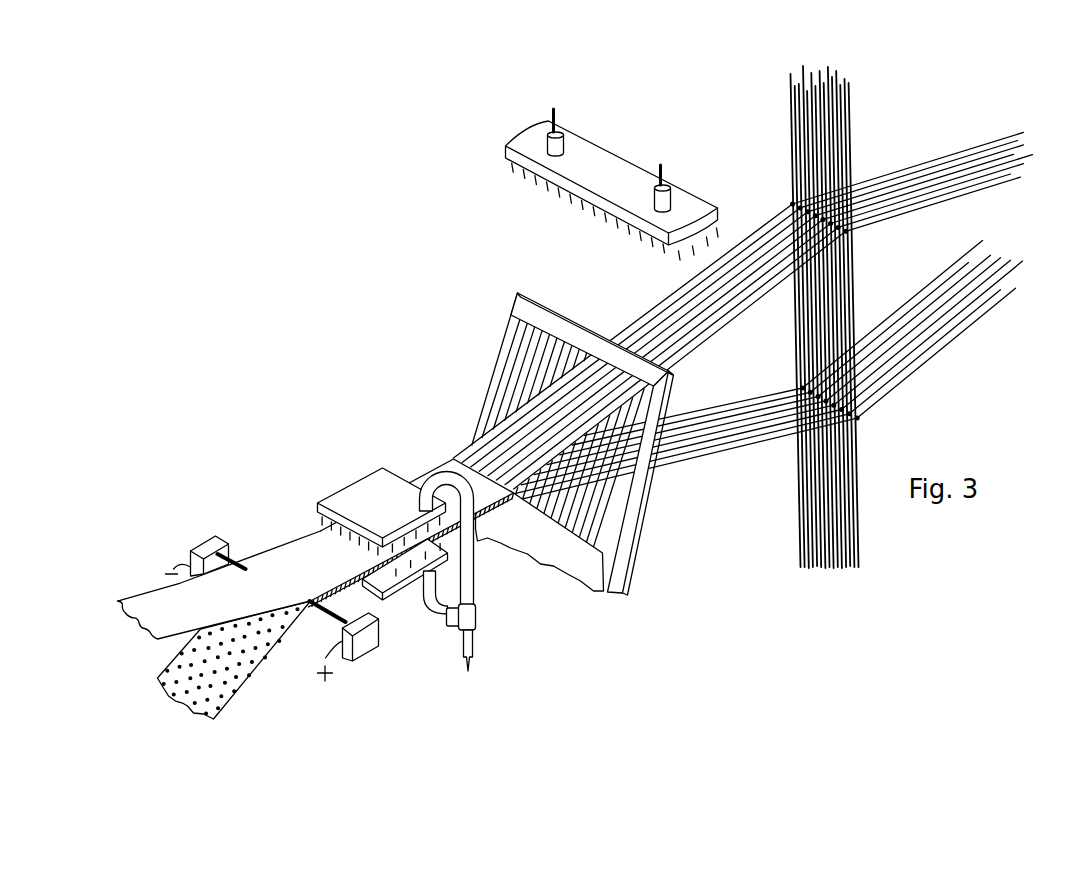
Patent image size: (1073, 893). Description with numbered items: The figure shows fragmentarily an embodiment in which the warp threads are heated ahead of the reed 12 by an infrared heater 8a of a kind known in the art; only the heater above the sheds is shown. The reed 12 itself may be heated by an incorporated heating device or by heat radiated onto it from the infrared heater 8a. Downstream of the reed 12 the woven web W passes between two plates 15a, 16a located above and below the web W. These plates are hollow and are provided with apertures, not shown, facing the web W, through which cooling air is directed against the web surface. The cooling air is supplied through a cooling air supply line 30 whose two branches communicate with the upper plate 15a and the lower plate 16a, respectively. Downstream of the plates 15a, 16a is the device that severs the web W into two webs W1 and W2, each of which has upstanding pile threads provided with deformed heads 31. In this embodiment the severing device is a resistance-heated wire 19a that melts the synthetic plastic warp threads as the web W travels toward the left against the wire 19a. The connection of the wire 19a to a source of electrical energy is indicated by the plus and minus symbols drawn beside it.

The infrared heater 8a is at (617, 170).
The reed 12 is at (626, 545).
The web W is at (453, 462).
The first web W1 is at (139, 641).
The second web W2 is at (175, 709).
The deformed heads 31 is at (223, 680).
The upper cooling plate 15a is at (362, 497).
The lower cooling plate 16a is at (401, 584).
The cooling air supply line 30 is at (475, 641).
The resistance-heated wire 19a is at (245, 560).